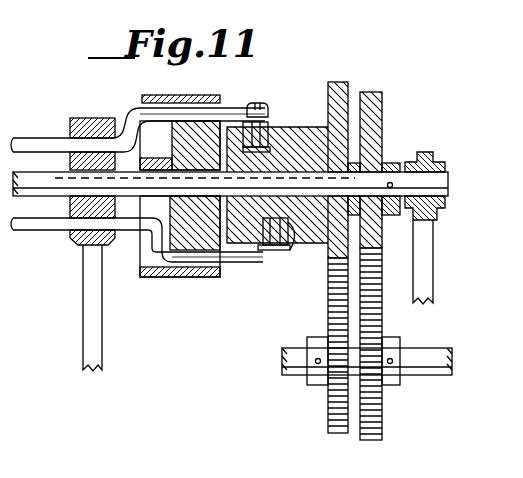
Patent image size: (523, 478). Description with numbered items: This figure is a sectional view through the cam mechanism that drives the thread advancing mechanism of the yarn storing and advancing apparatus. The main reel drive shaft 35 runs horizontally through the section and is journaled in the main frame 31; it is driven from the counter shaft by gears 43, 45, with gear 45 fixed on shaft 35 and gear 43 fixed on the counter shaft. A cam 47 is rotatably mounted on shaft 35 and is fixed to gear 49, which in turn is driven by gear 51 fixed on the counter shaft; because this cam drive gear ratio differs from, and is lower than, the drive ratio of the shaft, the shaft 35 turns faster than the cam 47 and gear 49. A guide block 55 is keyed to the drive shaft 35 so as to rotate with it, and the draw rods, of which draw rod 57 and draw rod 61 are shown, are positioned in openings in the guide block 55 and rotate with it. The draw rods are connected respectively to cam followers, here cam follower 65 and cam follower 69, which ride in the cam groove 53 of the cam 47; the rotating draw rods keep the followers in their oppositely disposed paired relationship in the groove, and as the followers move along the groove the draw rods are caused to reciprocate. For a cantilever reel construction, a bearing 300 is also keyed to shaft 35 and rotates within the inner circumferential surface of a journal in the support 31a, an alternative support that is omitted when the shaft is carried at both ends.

The bearing 300 is at (70, 127).
The draw rod 57 is at (126, 112).
The guide block 55 is at (172, 95).
The cam follower 65 is at (262, 136).
The gear 49 is at (343, 96).
The gear 45 is at (383, 108).
The main reel drive shaft 35 is at (448, 181).
The main frame 31 is at (430, 243).
The support 31a is at (85, 311).
The draw rod 61 is at (212, 270).
The cam follower 69 is at (260, 262).
The cam groove 53 is at (296, 250).
The cam 47 is at (322, 243).
The gear 51 is at (328, 400).
The gear 43 is at (375, 402).